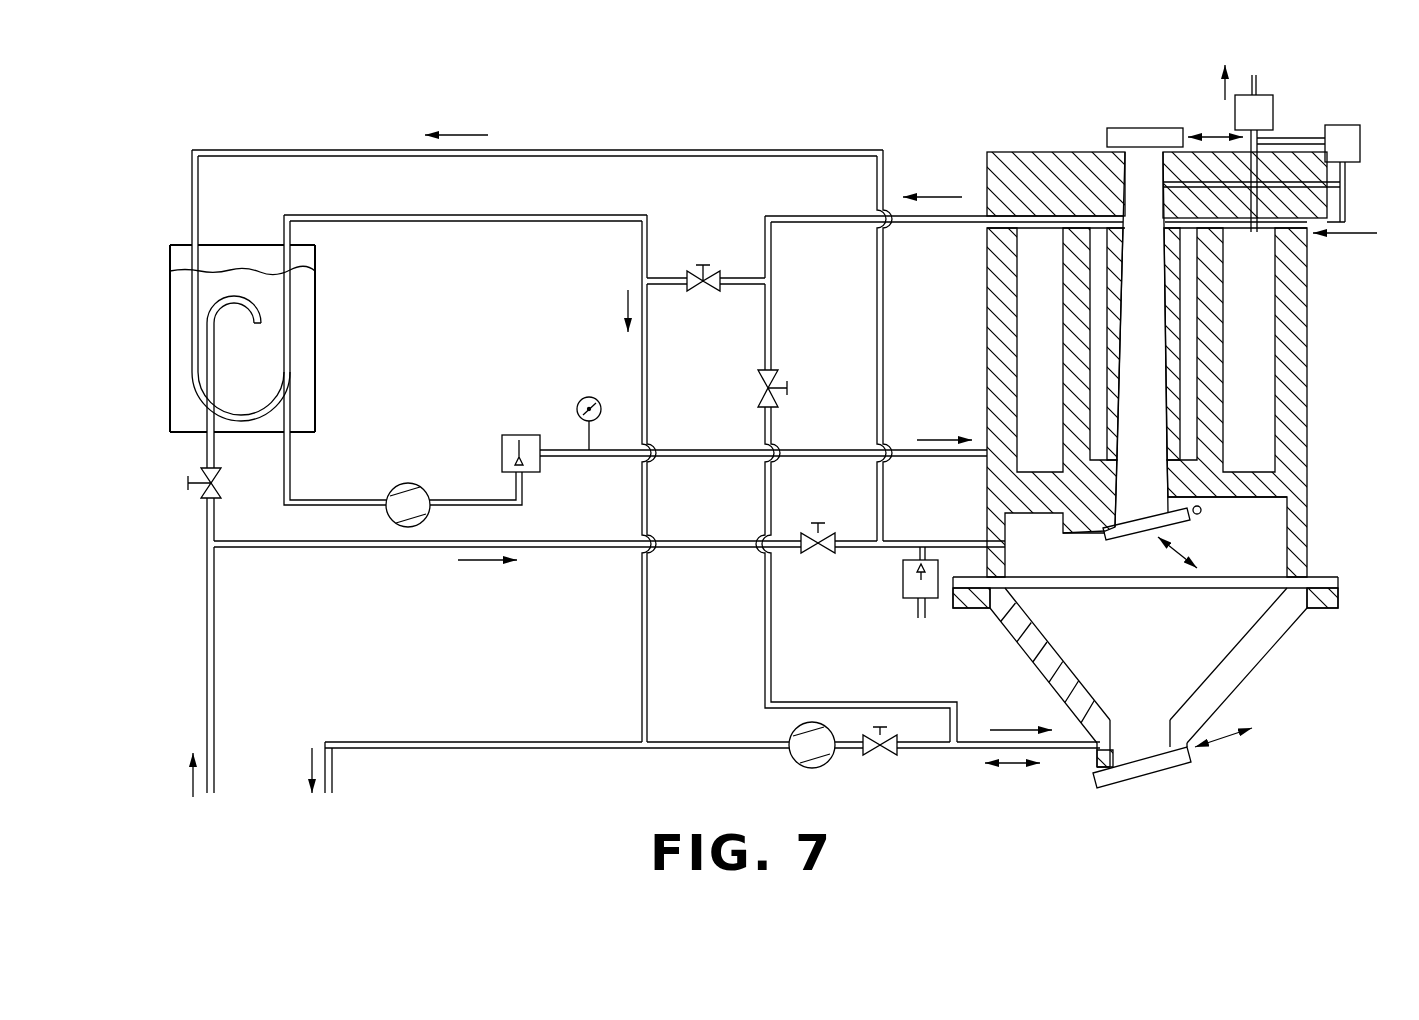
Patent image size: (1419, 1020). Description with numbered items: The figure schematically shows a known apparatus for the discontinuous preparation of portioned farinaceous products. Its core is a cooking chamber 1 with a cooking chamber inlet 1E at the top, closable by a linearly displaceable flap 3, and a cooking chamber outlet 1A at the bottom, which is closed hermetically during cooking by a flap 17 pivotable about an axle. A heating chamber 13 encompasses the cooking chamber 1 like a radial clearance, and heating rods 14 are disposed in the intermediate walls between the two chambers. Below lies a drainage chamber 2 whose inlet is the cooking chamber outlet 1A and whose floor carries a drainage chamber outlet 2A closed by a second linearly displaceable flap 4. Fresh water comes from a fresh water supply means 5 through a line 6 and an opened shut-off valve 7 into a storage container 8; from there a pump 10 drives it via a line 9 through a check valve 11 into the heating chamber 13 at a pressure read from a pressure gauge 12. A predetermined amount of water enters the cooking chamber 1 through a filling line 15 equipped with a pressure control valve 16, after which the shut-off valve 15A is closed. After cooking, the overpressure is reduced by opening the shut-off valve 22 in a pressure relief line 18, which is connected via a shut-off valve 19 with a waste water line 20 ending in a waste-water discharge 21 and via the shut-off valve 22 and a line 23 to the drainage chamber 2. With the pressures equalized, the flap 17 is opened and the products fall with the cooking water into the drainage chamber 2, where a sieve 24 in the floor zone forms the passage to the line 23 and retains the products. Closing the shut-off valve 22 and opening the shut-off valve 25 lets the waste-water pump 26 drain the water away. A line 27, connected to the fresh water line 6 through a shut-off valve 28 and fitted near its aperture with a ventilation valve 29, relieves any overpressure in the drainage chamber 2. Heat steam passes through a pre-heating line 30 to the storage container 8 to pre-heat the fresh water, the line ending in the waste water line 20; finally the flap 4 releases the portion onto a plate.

The cooking chamber 1 is at (1165, 258).
The cooking chamber outlet 1A is at (1150, 512).
The cooking chamber inlet 1E is at (1125, 190).
The drainage chamber 2 is at (1290, 543).
The drainage chamber outlet 2A is at (1157, 747).
The linearly displaceable flap 3 is at (1133, 130).
The linearly displaceable flap 4 is at (1167, 763).
The fresh water supply means 5 is at (205, 790).
The line 6 is at (207, 630).
The shut-off valve 7 is at (200, 495).
The storage container 8 is at (307, 342).
The line 9 is at (348, 500).
The pump 10 is at (413, 500).
The check valve 11 is at (508, 442).
The pressure gauge 12 is at (583, 400).
The heating chamber 13 is at (1260, 305).
The heating rods 14 is at (1190, 365).
The filling line 15 is at (1275, 140).
The shut-off valve 15A is at (1350, 130).
The pressure control valve 16 is at (1244, 103).
The flap 17 is at (1190, 518).
The pressure relief line 18 is at (933, 222).
The shut-off valve 19 is at (712, 272).
The waste water line 20 is at (562, 748).
The waste-water discharge 21 is at (328, 785).
The shut-off valve 22 is at (773, 378).
The line 23 is at (763, 662).
The sieve 24 is at (1110, 757).
The shut-off valve 25 is at (883, 757).
The waste-water pump 26 is at (812, 762).
The line 27 is at (918, 543).
The shut-off valve 28 is at (818, 553).
The ventilation valve 29 is at (907, 588).
The pre-heating line 30 is at (252, 148).